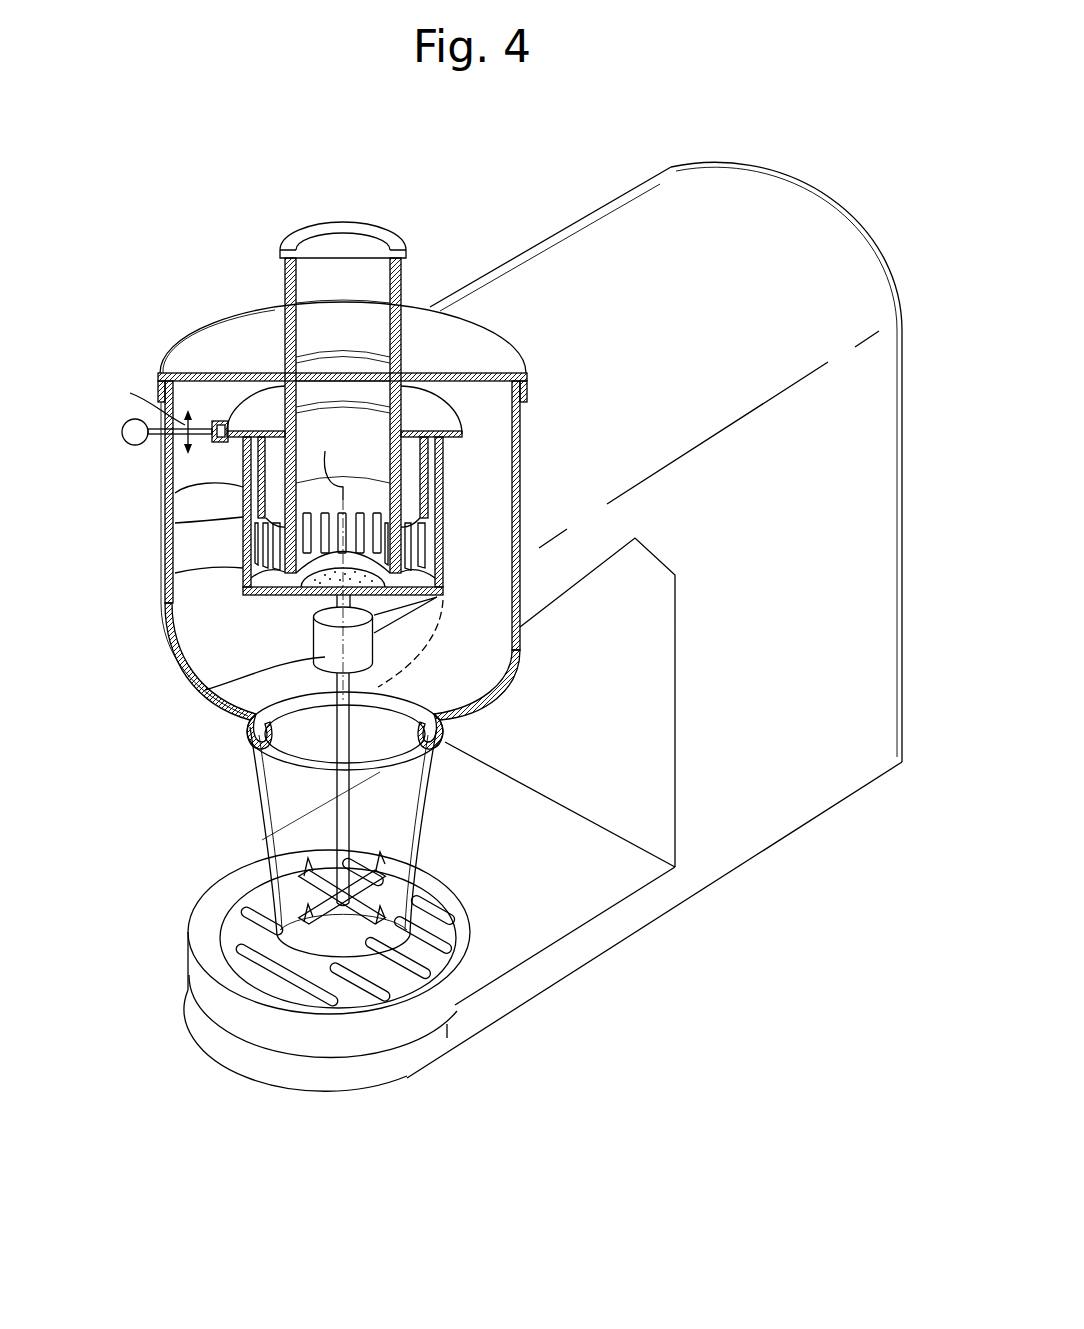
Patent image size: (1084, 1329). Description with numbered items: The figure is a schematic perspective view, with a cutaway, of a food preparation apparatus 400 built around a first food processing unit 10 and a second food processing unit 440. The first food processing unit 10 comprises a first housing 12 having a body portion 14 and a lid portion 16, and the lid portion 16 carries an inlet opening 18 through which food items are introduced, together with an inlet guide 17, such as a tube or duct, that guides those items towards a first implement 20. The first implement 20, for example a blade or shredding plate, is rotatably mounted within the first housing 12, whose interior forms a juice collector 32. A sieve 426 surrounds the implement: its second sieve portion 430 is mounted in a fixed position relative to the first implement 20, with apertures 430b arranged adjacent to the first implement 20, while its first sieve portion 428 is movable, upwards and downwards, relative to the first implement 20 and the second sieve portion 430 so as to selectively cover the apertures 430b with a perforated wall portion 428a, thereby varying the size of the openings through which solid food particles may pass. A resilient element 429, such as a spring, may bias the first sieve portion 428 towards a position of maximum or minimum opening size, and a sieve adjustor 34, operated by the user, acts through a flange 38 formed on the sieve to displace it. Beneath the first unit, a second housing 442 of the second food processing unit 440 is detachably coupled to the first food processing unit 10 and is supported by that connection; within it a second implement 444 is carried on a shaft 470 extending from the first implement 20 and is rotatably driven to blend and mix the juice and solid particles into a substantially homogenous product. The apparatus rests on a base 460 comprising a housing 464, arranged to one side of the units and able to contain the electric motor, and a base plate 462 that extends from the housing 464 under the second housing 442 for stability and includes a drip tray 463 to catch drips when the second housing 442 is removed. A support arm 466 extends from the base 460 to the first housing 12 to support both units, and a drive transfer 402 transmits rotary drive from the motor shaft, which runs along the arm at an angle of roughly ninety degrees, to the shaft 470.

The first food processing unit 10 is at (120, 334).
The first housing 12 is at (165, 522).
The body portion 14 is at (162, 463).
The lid portion 16 is at (196, 345).
The inlet guide 17 is at (403, 278).
The inlet opening 18 is at (333, 224).
The first implement 20 is at (243, 575).
The juice collector 32 is at (217, 637).
The sieve adjustor 34 is at (123, 424).
The flange 38 is at (257, 410).
The food preparation apparatus 400 is at (858, 145).
The drive transfer 402 is at (262, 682).
The sieve 426 is at (243, 596).
The first sieve portion 428 is at (468, 440).
The perforated wall portion 428a is at (440, 470).
The resilient element 429 is at (175, 493).
The second sieve portion 430 is at (243, 548).
The apertures 430b is at (443, 594).
The second food processing unit 440 is at (118, 862).
The second housing 442 is at (262, 790).
The second implement 444 is at (282, 924).
The base 460 is at (783, 813).
The base plate 462 is at (534, 969).
The drip tray 463 is at (382, 988).
The housing 464 is at (880, 477).
The support arm 466 is at (567, 285).
The shaft 470 is at (338, 822).